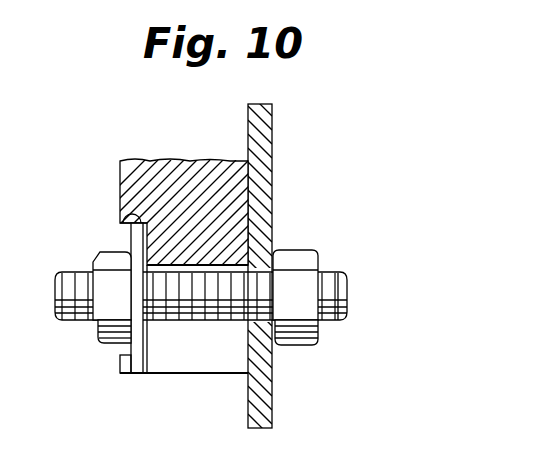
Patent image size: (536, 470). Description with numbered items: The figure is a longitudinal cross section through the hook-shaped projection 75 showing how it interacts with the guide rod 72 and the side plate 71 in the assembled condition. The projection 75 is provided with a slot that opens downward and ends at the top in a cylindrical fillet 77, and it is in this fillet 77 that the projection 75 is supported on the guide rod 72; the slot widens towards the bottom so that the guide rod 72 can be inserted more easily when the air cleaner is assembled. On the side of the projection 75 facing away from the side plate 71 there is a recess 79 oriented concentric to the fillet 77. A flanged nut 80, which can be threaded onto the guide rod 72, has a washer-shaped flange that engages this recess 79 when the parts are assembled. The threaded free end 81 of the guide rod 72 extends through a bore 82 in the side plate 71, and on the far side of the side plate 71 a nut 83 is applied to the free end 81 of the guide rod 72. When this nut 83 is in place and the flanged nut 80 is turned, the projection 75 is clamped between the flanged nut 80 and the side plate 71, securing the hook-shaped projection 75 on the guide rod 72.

The side plate 71 is at (265, 126).
The guide rod 72 is at (68, 321).
The projection 75 is at (188, 180).
The cylindrical fillet 77 is at (213, 264).
The recess 79 is at (121, 214).
The flanged nut 80 is at (108, 343).
The free end 81 is at (335, 272).
The bore 82 is at (277, 346).
The nut 83 is at (305, 250).